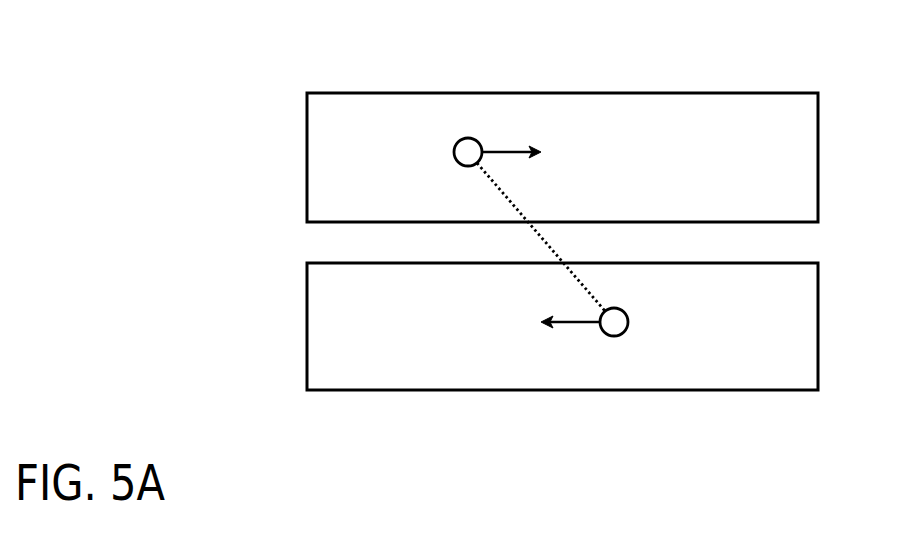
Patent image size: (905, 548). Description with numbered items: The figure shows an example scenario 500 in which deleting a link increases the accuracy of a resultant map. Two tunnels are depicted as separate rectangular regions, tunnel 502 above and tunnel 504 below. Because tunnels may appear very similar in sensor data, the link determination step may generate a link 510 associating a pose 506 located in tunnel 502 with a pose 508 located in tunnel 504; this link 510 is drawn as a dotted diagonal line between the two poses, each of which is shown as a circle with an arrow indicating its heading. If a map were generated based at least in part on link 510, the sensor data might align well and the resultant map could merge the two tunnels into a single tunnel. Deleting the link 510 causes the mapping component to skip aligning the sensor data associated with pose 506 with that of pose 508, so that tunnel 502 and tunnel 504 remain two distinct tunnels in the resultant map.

The example scenario 500 is at (211, 41).
The tunnel 502 is at (289, 148).
The tunnel 504 is at (295, 326).
The pose 506 is at (459, 141).
The pose 508 is at (614, 338).
The link 510 is at (502, 203).